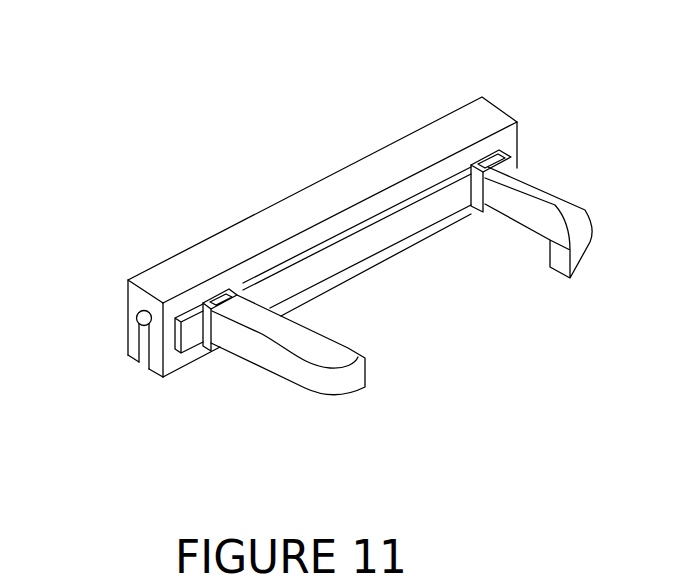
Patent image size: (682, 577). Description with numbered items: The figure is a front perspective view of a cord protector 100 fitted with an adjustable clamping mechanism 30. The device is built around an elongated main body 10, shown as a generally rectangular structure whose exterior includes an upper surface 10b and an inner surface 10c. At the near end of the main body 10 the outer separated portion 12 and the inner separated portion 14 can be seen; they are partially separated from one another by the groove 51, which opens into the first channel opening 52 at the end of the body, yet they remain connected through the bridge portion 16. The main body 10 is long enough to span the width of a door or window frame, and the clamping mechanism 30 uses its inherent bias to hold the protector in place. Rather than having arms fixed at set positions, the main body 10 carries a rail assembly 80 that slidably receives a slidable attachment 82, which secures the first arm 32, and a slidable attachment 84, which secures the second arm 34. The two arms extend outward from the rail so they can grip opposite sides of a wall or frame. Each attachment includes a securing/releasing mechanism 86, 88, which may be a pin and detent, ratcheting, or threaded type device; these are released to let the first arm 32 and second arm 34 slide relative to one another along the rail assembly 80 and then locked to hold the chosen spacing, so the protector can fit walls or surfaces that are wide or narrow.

The cord protector 100 is at (319, 248).
The main body 10 is at (269, 257).
The upper surface 10b is at (225, 247).
The inner surface 10c is at (412, 183).
The outer separated portion 12 is at (128, 363).
The inner separated portion 14 is at (158, 372).
The bridge portion 16 is at (128, 295).
The groove 51 is at (140, 368).
The first channel opening 52 is at (140, 318).
The clamping mechanism 30 is at (392, 273).
The first arm 32 is at (297, 370).
The second arm 34 is at (562, 206).
The rail assembly 80 is at (425, 220).
The slidable attachment 82 is at (240, 296).
The slidable attachment 84 is at (485, 210).
The securing/releasing mechanism 86 is at (212, 352).
The securing/releasing mechanism 88 is at (512, 150).